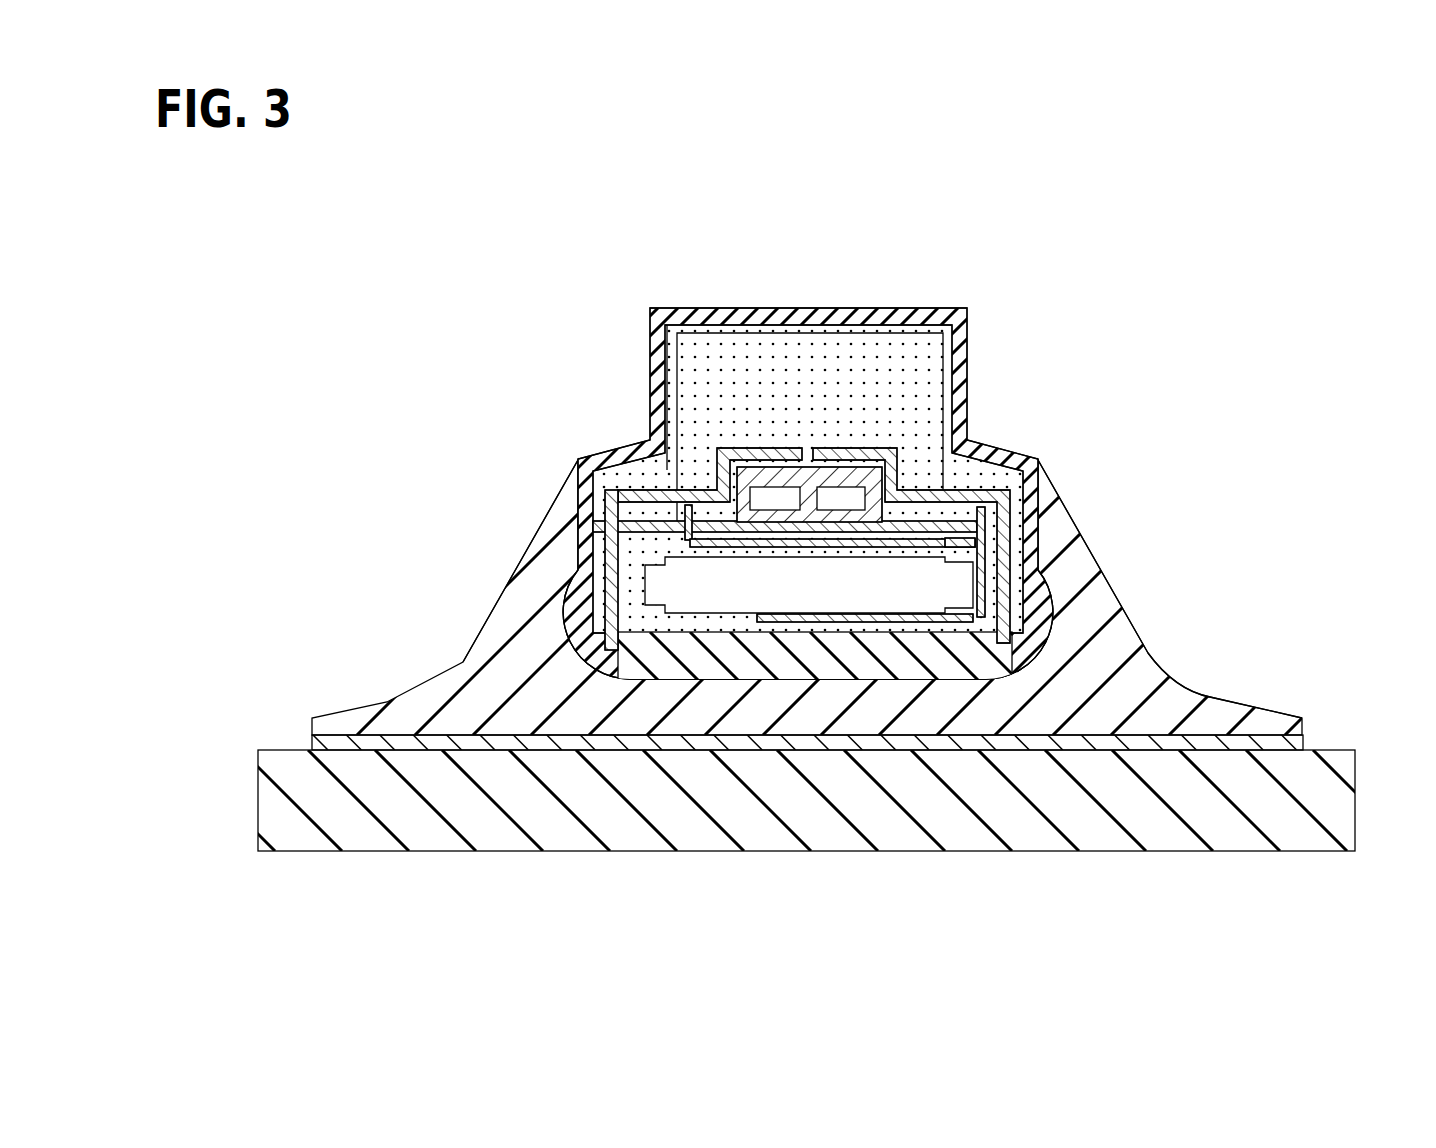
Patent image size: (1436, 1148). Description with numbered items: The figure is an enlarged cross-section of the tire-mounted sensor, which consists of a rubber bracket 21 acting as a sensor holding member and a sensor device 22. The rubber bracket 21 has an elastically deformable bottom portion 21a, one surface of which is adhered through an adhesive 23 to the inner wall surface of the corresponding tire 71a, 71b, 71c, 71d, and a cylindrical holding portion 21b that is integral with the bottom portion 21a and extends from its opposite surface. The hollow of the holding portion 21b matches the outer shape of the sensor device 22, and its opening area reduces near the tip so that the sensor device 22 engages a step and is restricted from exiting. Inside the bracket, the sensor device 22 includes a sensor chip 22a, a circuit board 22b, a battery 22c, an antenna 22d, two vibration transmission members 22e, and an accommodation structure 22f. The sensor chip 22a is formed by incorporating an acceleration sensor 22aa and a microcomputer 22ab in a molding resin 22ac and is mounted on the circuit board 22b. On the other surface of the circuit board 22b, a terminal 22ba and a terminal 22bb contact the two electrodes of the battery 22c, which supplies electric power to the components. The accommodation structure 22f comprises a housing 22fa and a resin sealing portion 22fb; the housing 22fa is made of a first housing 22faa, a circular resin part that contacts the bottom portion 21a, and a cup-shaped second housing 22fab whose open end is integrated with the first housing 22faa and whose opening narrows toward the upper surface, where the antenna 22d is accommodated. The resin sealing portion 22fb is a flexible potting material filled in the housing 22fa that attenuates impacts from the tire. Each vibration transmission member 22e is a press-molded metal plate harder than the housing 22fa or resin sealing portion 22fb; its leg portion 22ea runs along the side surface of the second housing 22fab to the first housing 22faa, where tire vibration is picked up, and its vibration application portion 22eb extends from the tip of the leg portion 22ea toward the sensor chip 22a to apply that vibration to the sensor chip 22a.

The rubber bracket 21 is at (874, 587).
The bottom portion 21a is at (1182, 698).
The holding portion 21b is at (1060, 528).
The sensor device 22 is at (812, 603).
The sensor chip 22a is at (935, 421).
The acceleration sensor 22aa is at (777, 487).
The microcomputer 22ab is at (837, 487).
The molding resin 22ac is at (862, 473).
The circuit board 22b is at (859, 695).
The terminal 22ba is at (703, 545).
The terminal 22bb is at (968, 617).
The battery 22c is at (808, 600).
The antenna 22d is at (957, 424).
The vibration transmission member 22e is at (698, 512).
The leg portion 22ea is at (577, 507).
The vibration application portion 22eb is at (742, 488).
The accommodation structure 22f is at (1050, 570).
The housing 22fa is at (1050, 585).
The first housing 22faa is at (1047, 633).
The second housing 22fab is at (1020, 558).
The resin sealing portion 22fb is at (1015, 547).
The adhesive 23 is at (1280, 745).
The tire 71a is at (1165, 832).
The tire 71b is at (760, 833).
The tire 71c is at (760, 833).
The tire 71d is at (760, 833).